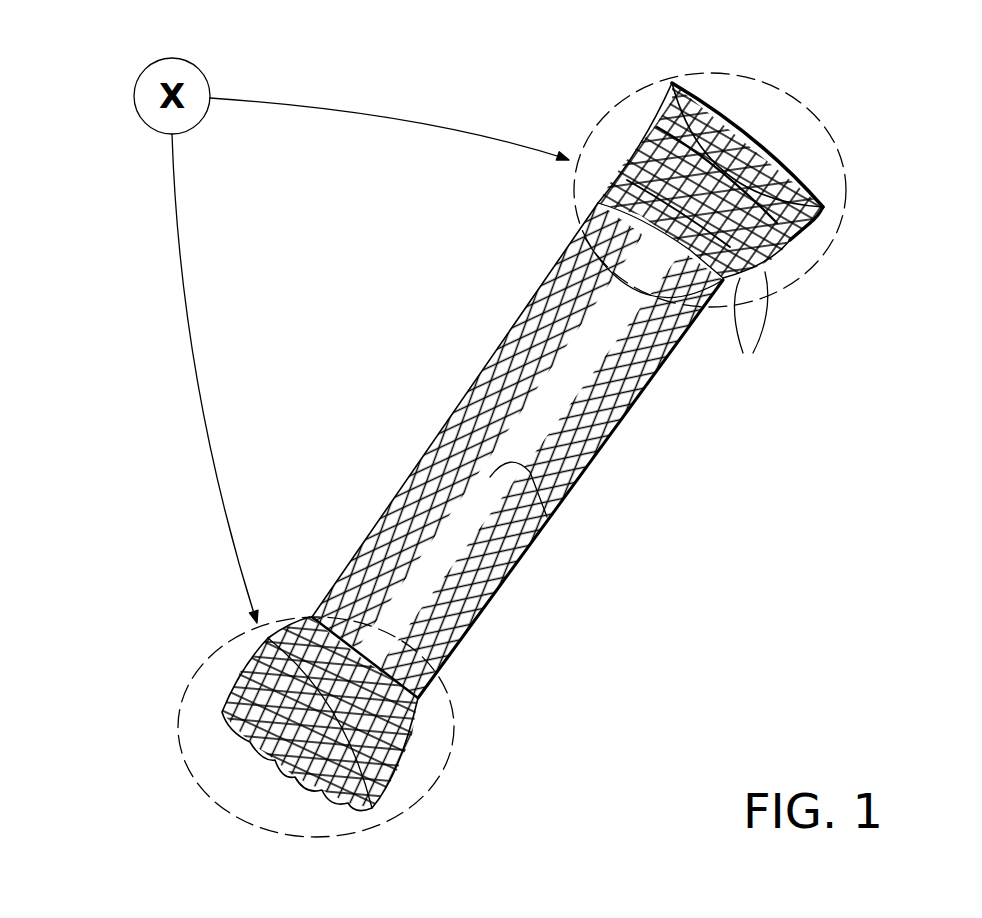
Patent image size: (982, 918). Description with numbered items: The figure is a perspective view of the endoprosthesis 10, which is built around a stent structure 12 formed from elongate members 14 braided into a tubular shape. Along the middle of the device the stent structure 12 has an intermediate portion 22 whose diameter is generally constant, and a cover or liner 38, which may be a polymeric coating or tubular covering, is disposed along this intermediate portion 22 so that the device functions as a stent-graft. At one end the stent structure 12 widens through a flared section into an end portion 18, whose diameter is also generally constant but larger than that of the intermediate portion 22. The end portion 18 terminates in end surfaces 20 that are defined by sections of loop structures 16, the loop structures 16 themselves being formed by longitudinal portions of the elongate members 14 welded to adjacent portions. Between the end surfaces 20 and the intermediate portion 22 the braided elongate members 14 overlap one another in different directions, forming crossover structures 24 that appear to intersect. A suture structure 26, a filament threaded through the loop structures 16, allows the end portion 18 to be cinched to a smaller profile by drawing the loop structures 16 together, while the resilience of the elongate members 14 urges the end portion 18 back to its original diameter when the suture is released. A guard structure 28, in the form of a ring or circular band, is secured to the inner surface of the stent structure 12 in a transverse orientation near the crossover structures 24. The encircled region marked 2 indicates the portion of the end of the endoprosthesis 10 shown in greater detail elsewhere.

The stent graft device 2 is at (833, 150).
The endoprosthesis 10 is at (630, 147).
The stent structure 12 is at (621, 179).
The elongate members 14 is at (750, 328).
The loop structures 16 is at (810, 177).
The end portion 18 is at (783, 260).
The end surfaces 20 is at (707, 110).
The intermediate portion 22 is at (560, 274).
The crossover structures 24 is at (750, 150).
The suture structure 26 is at (818, 208).
The guard structure 28 is at (660, 107).
The cover or liner 38 is at (547, 517).